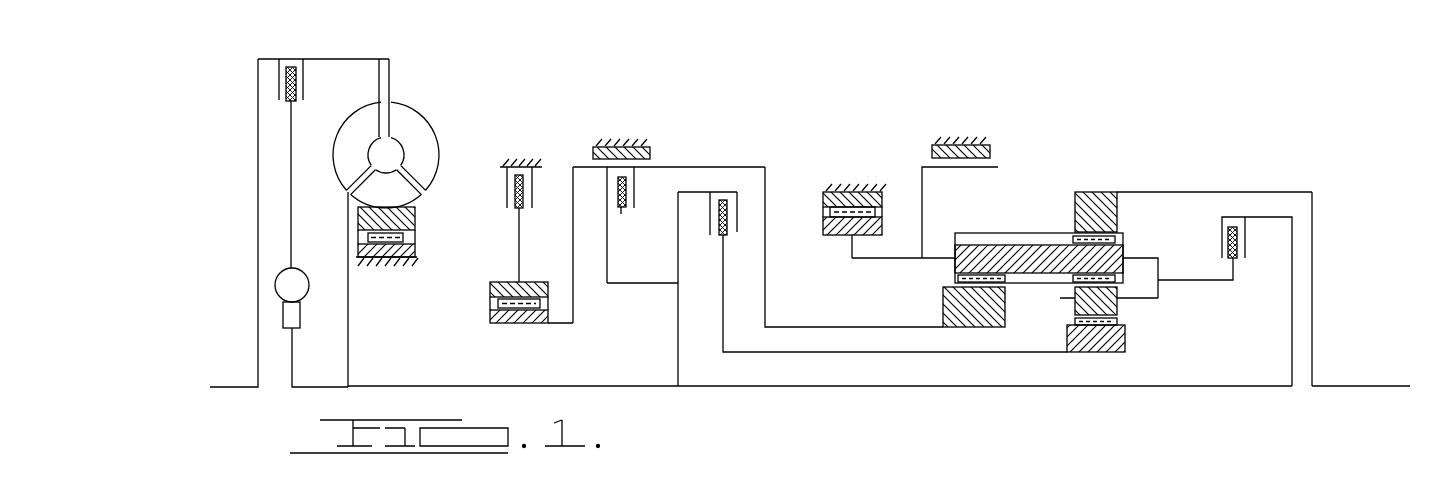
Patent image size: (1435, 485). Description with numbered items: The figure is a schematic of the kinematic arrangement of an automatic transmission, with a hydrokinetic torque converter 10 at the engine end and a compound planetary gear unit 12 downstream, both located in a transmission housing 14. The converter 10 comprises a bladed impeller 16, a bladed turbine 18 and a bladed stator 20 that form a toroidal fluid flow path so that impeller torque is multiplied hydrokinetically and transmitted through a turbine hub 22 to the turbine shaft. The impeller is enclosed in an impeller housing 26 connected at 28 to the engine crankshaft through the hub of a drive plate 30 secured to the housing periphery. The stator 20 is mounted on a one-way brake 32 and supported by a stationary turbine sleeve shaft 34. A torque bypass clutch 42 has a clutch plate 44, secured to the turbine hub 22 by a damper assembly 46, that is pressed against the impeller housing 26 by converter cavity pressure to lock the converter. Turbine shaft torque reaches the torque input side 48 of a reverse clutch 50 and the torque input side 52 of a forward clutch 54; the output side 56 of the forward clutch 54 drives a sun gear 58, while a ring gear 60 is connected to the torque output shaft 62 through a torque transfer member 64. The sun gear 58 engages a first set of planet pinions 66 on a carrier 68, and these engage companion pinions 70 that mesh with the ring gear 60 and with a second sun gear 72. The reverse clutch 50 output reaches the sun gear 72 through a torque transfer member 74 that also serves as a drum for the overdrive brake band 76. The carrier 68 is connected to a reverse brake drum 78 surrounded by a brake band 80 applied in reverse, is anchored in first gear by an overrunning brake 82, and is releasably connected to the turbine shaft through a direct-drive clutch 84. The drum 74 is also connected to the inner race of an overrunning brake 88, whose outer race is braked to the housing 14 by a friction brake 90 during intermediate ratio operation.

The hydrokinetic torque converter 10 is at (441, 110).
The compound planetary gear unit 12 is at (1098, 190).
The transmission housing 14 is at (825, 200).
The bladed impeller 16 is at (410, 162).
The bladed turbine 18 is at (342, 144).
The bladed stator 20 is at (375, 194).
The turbine hub 22 is at (348, 355).
The impeller housing 26 is at (378, 62).
The crankshaft connection 28 is at (258, 314).
The drive plate 30 is at (258, 110).
The one-way brake 32 is at (400, 238).
The stationary turbine sleeve shaft 34 is at (395, 264).
The torque bypass clutch 42 is at (302, 86).
The clutch plate 44 is at (291, 232).
The damper assembly 46 is at (300, 290).
The torque input side of reverse clutch 48 is at (667, 286).
The reverse clutch 50 is at (616, 198).
The torque input side of forward clutch 52 is at (625, 168).
The forward clutch 54 is at (716, 220).
The output side of forward clutch 56 is at (720, 306).
The sun gear 58 is at (1112, 350).
The ring gear 60 is at (1082, 210).
The torque output shaft 62 is at (1330, 388).
The torque transfer member 64 is at (1312, 250).
The first set of planet pinions 66 is at (1112, 304).
The carrier 68 is at (930, 260).
The companion pinions 70 is at (970, 238).
The second sun gear 72 is at (1000, 320).
The torque transfer member / brake drum 74 is at (765, 167).
The brake band 76 is at (595, 150).
The reverse brake drum 78 is at (975, 167).
The brake band 80 is at (985, 152).
The overrunning brake 82 is at (833, 220).
The direct-drive clutch 84 is at (1228, 240).
The overrunning brake 88 is at (522, 318).
The friction brake 90 is at (513, 190).